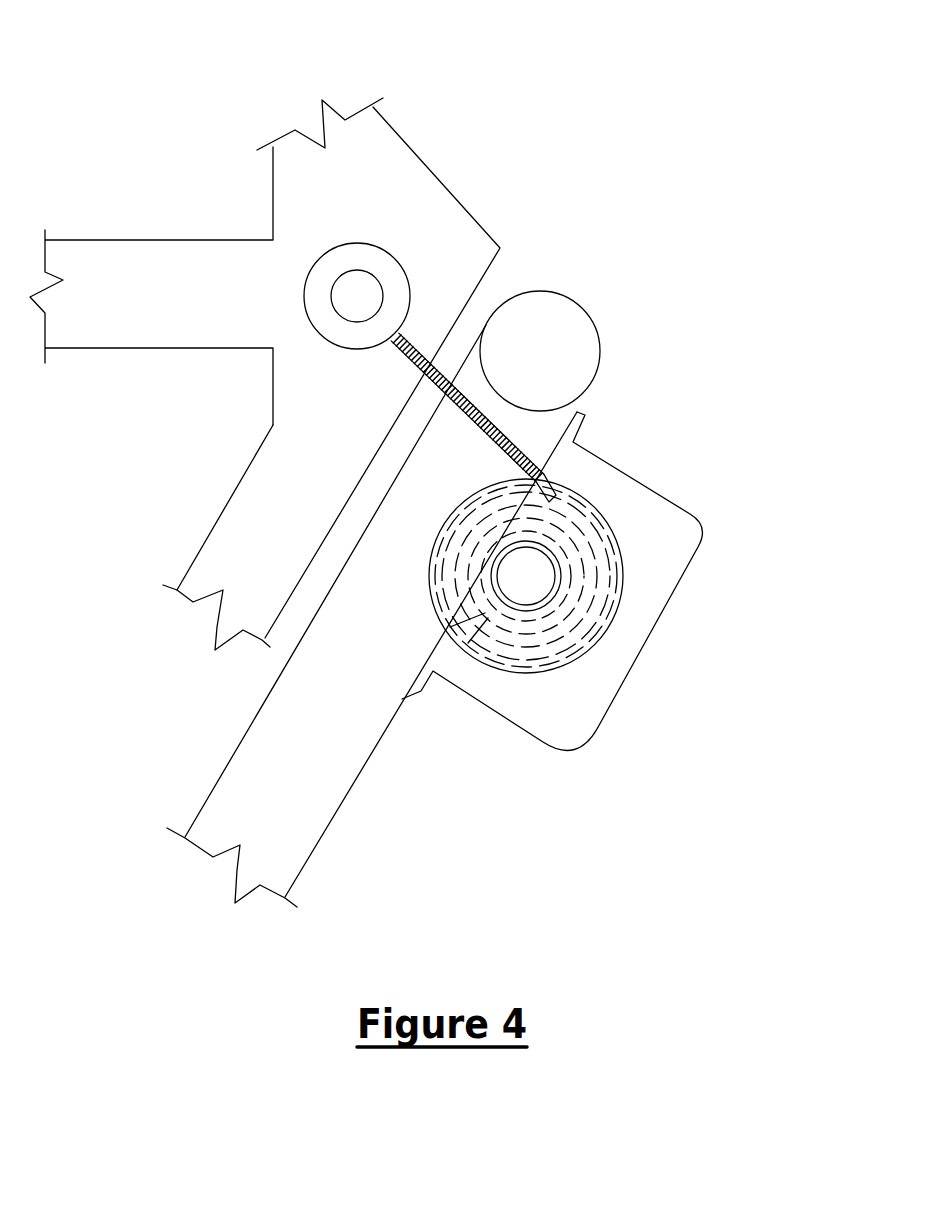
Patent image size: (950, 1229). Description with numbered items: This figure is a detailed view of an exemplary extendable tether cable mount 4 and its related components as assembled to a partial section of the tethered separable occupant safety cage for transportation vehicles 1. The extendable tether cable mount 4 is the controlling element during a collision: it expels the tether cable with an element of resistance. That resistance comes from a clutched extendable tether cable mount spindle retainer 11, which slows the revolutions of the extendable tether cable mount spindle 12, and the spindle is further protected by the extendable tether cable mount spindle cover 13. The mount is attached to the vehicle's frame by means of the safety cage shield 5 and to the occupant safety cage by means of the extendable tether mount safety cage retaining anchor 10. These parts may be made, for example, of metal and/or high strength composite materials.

The tethered separable occupant safety cage for transportation vehicles 1 is at (343, 197).
The extendable tether mount safety cage retaining anchor 10 is at (402, 268).
The extendable tether cable mount 4 is at (485, 403).
The safety cage shield 5 is at (343, 685).
The extendable tether cable mount spindle 12 is at (607, 517).
The extendable tether cable mount spindle cover 13 is at (665, 612).
The extendable tether cable mount spindle retainer 11 is at (533, 582).